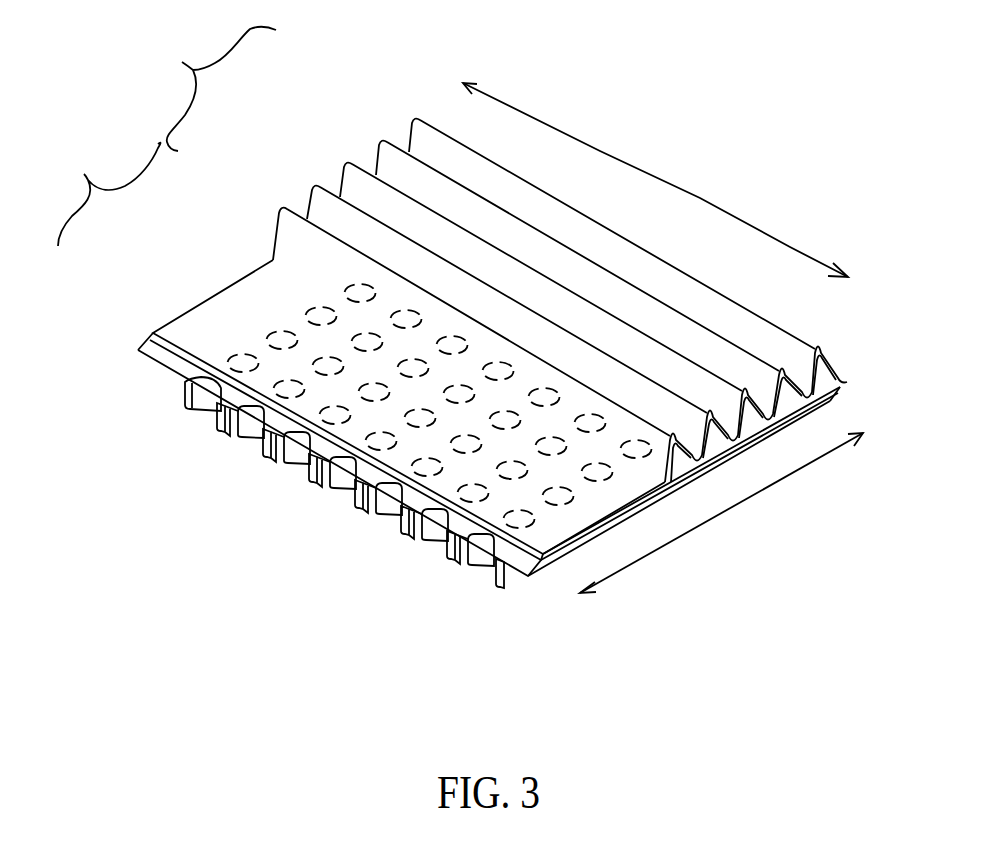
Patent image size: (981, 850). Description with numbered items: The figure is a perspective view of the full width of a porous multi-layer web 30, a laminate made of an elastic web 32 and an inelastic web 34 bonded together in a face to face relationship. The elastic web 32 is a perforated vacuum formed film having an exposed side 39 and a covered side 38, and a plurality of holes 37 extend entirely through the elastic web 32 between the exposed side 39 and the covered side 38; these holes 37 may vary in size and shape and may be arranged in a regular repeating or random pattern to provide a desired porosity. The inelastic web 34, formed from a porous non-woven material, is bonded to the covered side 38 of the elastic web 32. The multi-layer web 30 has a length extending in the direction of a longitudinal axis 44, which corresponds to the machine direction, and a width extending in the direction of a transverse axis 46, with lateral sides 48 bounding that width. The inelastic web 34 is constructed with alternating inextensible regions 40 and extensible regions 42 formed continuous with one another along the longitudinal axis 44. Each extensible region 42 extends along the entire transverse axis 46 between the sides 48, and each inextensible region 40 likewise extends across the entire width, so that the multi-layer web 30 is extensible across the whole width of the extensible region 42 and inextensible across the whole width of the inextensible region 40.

The multi-layer web 30 is at (298, 555).
The elastic web 32 is at (515, 580).
The inelastic web 34 is at (300, 236).
The holes 37 is at (248, 419).
The covered side 38 is at (465, 521).
The exposed side 39 is at (463, 558).
The inextensible regions 40 is at (89, 194).
The extensible regions 42 is at (194, 89).
The longitudinal axis 44 is at (700, 524).
The transverse axis 46 is at (587, 134).
The sides 48 is at (413, 123).